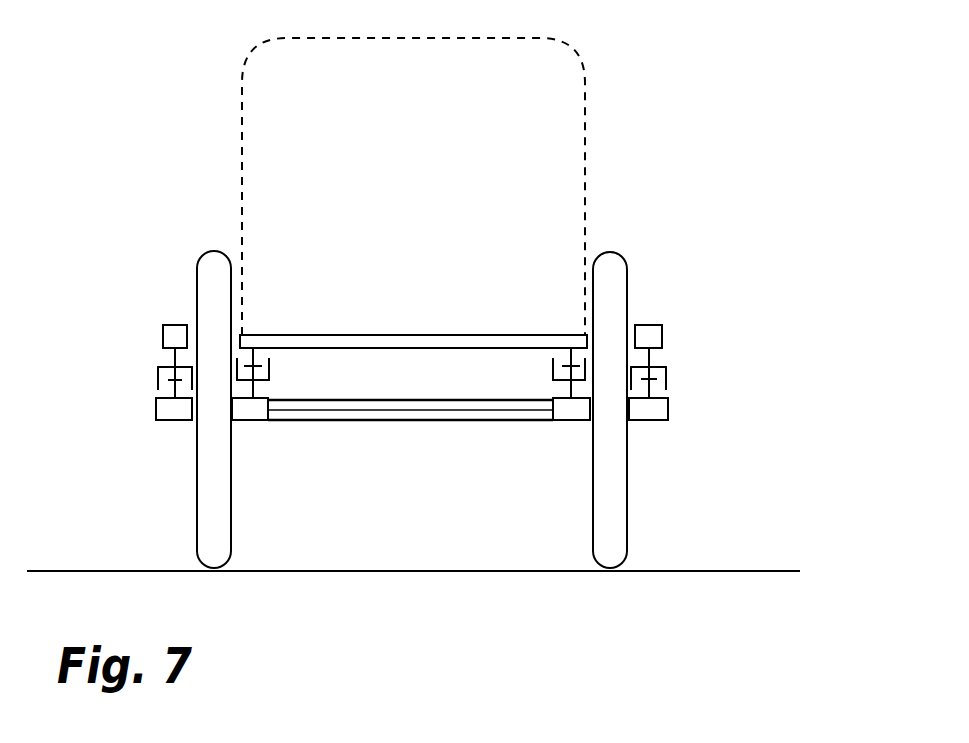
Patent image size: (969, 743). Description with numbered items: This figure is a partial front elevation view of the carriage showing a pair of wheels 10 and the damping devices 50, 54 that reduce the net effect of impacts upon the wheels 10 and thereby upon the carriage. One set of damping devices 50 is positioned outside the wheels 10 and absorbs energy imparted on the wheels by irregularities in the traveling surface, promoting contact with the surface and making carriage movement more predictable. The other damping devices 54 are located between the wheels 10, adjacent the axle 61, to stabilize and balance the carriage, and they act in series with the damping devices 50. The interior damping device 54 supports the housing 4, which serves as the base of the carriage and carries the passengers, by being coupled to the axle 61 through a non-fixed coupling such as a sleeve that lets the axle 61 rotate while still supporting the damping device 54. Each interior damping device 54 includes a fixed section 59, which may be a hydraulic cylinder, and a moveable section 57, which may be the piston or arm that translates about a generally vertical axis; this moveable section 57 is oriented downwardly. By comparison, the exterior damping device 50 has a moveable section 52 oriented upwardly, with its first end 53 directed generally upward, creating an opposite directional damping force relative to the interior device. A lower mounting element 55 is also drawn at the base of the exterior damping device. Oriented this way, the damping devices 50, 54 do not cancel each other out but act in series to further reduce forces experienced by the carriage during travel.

The housing 4 is at (442, 335).
The wheels 10 is at (610, 268).
The first end 53 is at (163, 325).
The damping device 50 is at (157, 377).
The moveable section 52 is at (168, 388).
The mounting block 55 is at (170, 422).
The moveable section 57 is at (257, 352).
The damping device 54 is at (270, 367).
The fixed section 59 is at (267, 390).
The axle 61 is at (470, 423).